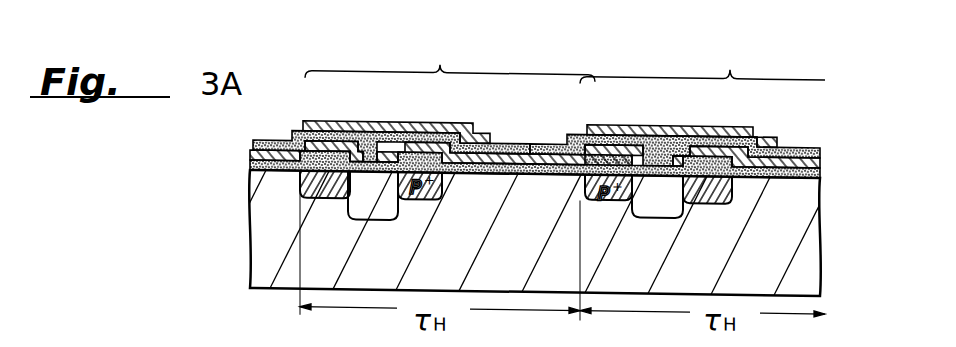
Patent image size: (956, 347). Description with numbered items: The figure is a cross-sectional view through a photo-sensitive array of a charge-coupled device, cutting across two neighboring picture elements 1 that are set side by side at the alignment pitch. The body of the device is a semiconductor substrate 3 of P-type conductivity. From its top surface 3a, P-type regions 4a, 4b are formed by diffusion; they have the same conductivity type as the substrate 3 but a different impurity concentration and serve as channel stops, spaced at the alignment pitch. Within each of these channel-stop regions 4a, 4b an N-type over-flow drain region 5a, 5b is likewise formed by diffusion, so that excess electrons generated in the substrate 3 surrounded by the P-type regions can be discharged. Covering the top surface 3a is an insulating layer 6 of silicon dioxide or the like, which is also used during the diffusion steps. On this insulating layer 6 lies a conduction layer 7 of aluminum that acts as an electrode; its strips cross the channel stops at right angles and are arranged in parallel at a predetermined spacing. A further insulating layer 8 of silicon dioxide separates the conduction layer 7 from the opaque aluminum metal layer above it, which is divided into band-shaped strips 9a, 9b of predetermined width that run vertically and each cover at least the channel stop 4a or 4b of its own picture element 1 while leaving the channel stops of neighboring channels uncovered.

The picture element 1 is at (470, 53).
The semiconductor substrate 3 is at (820, 214).
The top surface 3a is at (790, 146).
The channel stop region 4a is at (322, 199).
The channel stop region 4b is at (712, 199).
The over-flow drain region 5a is at (372, 220).
The over-flow drain region 5b is at (647, 214).
The insulating layer 6 is at (297, 131).
The conduction layer 7 is at (447, 113).
The insulating layer 8 is at (628, 129).
The band-shaped strip 9a is at (356, 115).
The band-shaped strip 9b is at (688, 112).